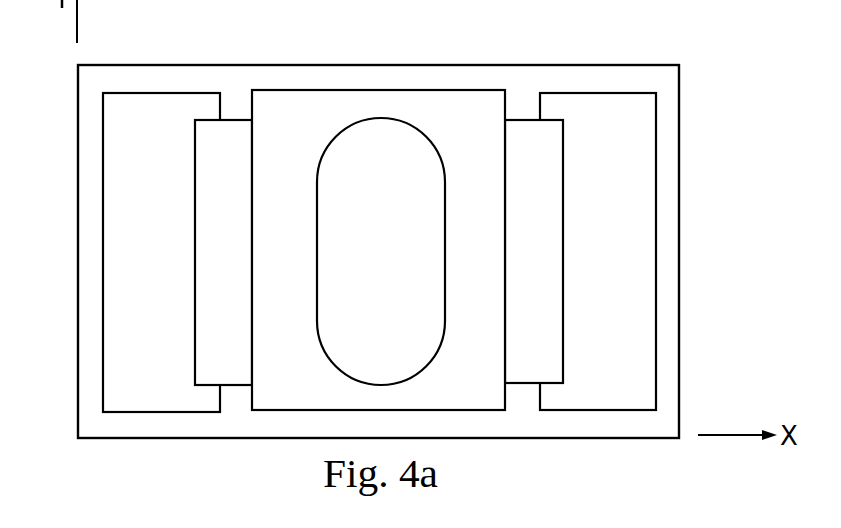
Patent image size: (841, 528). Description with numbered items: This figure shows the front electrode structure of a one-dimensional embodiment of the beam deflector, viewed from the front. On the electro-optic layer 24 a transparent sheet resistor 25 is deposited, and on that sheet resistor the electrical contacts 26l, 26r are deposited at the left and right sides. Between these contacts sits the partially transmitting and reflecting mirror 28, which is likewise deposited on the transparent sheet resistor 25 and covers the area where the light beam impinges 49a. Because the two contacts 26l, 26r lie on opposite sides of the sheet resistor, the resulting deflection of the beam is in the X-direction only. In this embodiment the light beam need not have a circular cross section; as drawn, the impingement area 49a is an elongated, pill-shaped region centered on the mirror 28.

The electro-optic layer 24 is at (665, 164).
The transparent sheet resistor 25 is at (525, 140).
The electrical contact 26l is at (182, 264).
The electrical contact 26r is at (620, 264).
The partially transmitting and reflecting mirror 28 is at (307, 394).
The area where the light beam impinges 49a is at (405, 266).